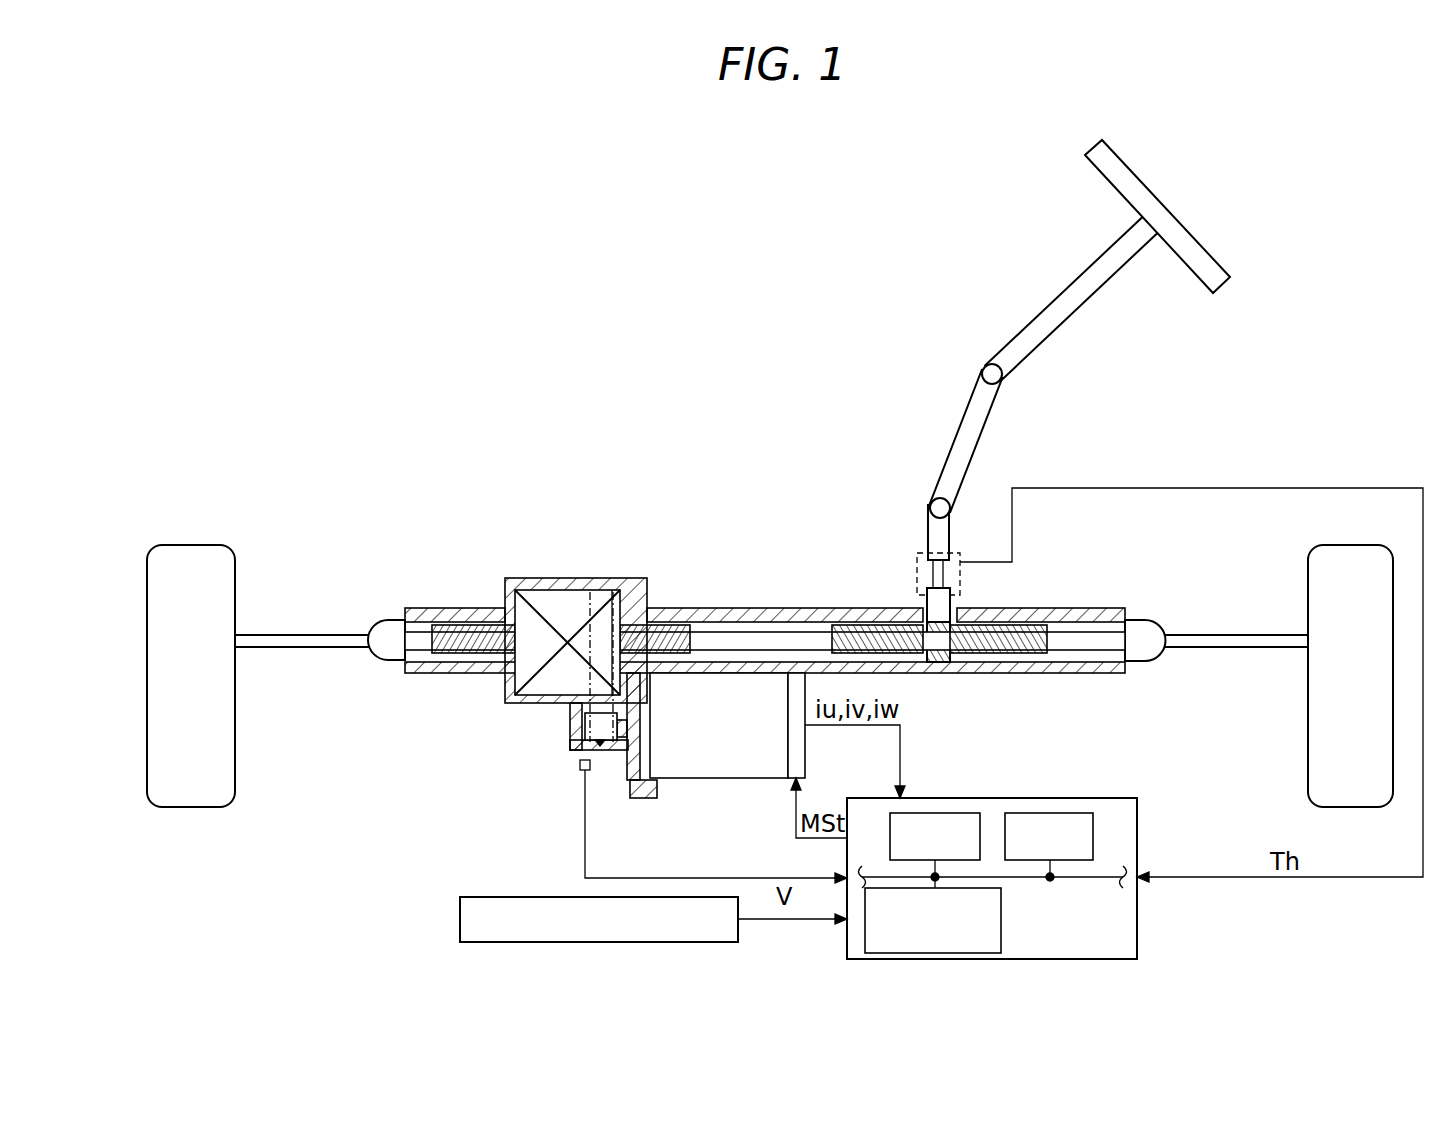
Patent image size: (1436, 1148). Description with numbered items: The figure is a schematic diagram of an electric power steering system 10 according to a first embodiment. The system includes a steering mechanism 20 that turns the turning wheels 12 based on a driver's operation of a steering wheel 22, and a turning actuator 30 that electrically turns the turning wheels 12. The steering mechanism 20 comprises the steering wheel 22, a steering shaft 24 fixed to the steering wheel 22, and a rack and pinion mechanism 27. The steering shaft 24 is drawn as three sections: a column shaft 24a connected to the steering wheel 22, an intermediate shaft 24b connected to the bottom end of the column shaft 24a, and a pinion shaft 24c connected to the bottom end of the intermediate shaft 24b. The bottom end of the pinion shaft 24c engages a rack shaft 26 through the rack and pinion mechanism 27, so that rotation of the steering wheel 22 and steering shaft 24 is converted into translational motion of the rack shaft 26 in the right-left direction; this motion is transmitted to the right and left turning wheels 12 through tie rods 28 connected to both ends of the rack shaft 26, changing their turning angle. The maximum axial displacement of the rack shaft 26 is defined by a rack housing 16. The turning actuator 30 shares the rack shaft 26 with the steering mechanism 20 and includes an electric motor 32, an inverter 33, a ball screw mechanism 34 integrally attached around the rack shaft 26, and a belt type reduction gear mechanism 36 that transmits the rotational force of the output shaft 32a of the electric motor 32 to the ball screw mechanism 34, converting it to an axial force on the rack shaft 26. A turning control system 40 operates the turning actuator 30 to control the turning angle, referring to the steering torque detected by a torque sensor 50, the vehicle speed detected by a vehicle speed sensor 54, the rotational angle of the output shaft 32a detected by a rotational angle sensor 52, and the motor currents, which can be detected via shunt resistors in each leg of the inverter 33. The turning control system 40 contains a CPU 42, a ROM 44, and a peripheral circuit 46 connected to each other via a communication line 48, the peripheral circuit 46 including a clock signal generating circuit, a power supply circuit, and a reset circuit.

The electric power steering system 10 is at (1314, 208).
The turning wheels 12 is at (191, 545).
The rack housing 16 is at (1034, 674).
The steering mechanism 20 is at (655, 320).
The steering wheel 22 is at (1188, 232).
The steering shaft 24 is at (995, 388).
The column shaft 24a is at (1068, 290).
The intermediate shaft 24b is at (964, 435).
The pinion shaft 24c is at (928, 532).
The rack shaft 26 is at (1077, 652).
The rack and pinion mechanism 27 is at (963, 690).
The tie rods 28 is at (292, 650).
The turning actuator 30 is at (508, 526).
The electric motor 32 is at (688, 780).
The output shaft 32a is at (619, 755).
The inverter 33 is at (800, 764).
The ball screw mechanism 34 is at (523, 657).
The belt type reduction gear mechanism 36 is at (556, 726).
The turning control system 40 is at (1010, 858).
The CPU 42 is at (934, 812).
The ROM 44 is at (1050, 812).
The peripheral circuit 46 is at (1002, 920).
The communication line 48 is at (1100, 881).
The torque sensor 50 is at (958, 552).
The rotational angle sensor 52 is at (460, 920).
The vehicle speed sensor 54 is at (578, 765).